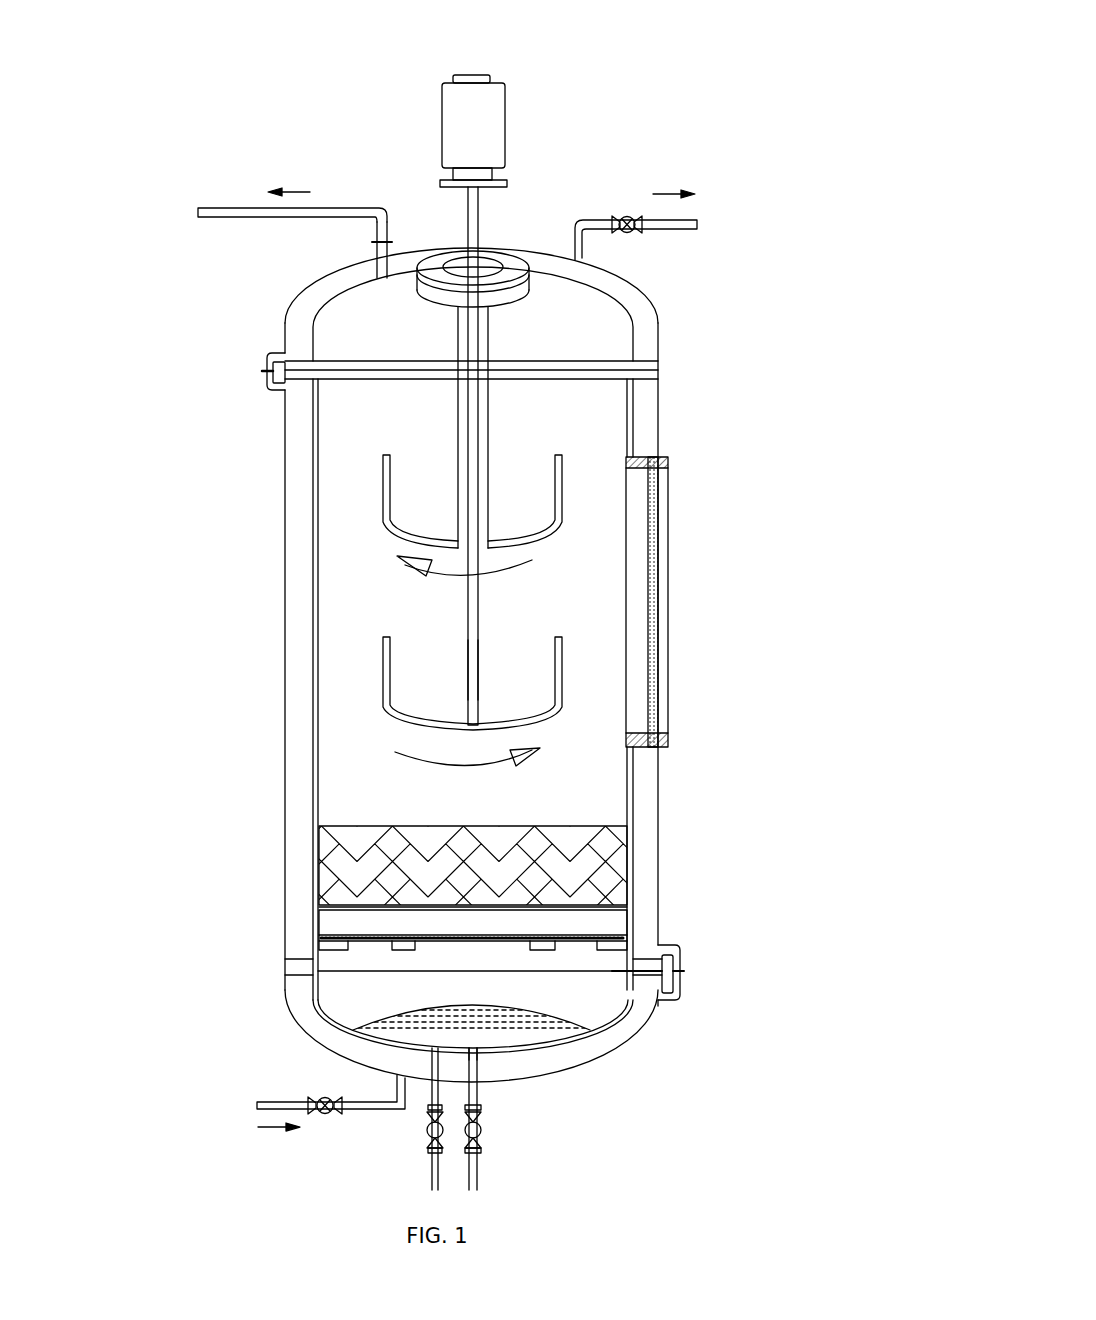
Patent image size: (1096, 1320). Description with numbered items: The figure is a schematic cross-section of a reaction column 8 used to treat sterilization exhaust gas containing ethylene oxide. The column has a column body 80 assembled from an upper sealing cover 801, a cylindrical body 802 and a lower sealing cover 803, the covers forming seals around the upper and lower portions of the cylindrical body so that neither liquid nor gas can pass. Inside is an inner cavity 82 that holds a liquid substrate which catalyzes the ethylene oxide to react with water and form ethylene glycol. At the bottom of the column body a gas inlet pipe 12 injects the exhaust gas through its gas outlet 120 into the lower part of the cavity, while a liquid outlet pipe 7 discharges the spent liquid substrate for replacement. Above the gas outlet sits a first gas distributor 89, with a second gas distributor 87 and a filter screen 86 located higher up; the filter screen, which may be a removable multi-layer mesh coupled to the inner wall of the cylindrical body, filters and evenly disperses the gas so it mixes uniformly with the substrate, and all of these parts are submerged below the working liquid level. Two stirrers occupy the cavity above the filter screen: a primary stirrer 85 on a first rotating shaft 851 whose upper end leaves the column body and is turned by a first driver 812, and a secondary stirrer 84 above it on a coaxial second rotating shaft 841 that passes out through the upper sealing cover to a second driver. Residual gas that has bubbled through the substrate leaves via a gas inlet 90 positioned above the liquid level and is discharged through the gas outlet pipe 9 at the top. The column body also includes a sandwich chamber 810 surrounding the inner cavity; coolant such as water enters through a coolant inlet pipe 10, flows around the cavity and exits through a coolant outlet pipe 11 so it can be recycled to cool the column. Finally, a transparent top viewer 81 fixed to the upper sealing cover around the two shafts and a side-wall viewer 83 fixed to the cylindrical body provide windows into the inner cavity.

The reaction column 8 is at (460, 16).
The column body 80 is at (660, 405).
The upper sealing cover 801 is at (285, 335).
The cylindrical body 802 is at (285, 625).
The lower sealing cover 803 is at (285, 1000).
The sandwich chamber 810 is at (632, 1020).
The top viewer 81 is at (487, 268).
The first driver 812 is at (487, 104).
The inner cavity 82 is at (617, 321).
The side-wall viewer 83 is at (658, 588).
The secondary stirrer 84 is at (383, 458).
The second rotating shaft 841 is at (460, 455).
The primary stirrer 85 is at (383, 640).
The first rotating shaft 851 is at (470, 670).
The filter screen 86 is at (618, 888).
The second gas distributor 87 is at (592, 935).
The first gas distributor 89 is at (505, 1005).
The gas outlet pipe 9 is at (221, 208).
The gas inlet 90 is at (377, 266).
The coolant inlet pipe 10 is at (270, 1100).
The coolant outlet pipe 11 is at (700, 222).
The gas inlet pipe 12 is at (478, 1165).
The gas outlet 120 is at (488, 1055).
The liquid outlet pipe 7 is at (432, 1165).